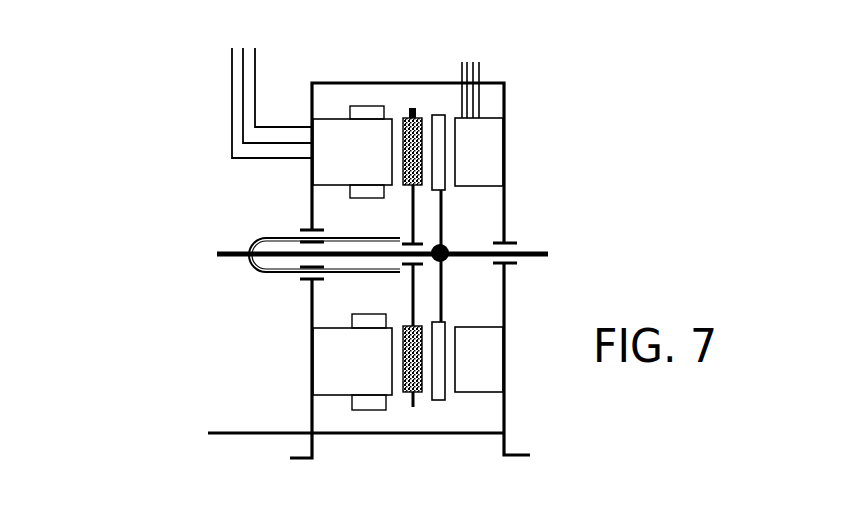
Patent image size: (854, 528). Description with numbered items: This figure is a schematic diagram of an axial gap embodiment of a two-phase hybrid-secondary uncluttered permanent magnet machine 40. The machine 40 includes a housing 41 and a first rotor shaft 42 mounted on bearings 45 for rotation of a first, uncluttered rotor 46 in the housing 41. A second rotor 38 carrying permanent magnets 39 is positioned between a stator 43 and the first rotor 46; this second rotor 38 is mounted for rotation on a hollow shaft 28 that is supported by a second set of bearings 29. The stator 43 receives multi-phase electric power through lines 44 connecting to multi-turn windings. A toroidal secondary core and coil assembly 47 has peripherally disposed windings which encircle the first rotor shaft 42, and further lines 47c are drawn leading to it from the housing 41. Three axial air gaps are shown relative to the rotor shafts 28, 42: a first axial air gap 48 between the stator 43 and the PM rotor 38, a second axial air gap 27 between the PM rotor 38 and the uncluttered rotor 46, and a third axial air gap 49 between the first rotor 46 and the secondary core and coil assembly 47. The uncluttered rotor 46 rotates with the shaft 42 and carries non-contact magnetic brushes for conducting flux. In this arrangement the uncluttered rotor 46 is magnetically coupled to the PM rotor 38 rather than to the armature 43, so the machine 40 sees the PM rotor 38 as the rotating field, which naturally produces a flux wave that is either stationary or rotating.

The second axial air gap 27 is at (430, 398).
The hollow shaft 28 is at (278, 237).
The second set of bearings 29 is at (303, 267).
The second rotor 38 is at (412, 108).
The permanent magnets 39 is at (404, 118).
The machine 40 is at (565, 170).
The housing 41 is at (507, 100).
The first rotor shaft 42 is at (223, 260).
The stator 43 is at (333, 128).
The lines 44 is at (230, 122).
The bearings 45 is at (502, 242).
The first, uncluttered rotor 46 is at (437, 113).
The toroidal secondary core and coil assembly 47 is at (467, 343).
The magnet lead wires 47c is at (480, 70).
The first axial air gap 48 is at (400, 388).
The third axial air gap 49 is at (452, 392).